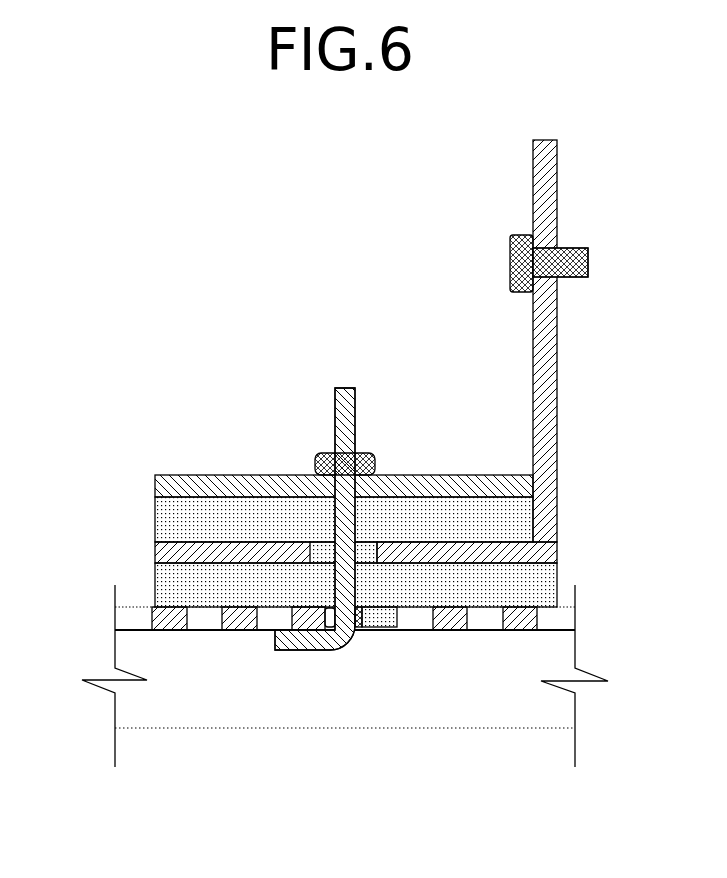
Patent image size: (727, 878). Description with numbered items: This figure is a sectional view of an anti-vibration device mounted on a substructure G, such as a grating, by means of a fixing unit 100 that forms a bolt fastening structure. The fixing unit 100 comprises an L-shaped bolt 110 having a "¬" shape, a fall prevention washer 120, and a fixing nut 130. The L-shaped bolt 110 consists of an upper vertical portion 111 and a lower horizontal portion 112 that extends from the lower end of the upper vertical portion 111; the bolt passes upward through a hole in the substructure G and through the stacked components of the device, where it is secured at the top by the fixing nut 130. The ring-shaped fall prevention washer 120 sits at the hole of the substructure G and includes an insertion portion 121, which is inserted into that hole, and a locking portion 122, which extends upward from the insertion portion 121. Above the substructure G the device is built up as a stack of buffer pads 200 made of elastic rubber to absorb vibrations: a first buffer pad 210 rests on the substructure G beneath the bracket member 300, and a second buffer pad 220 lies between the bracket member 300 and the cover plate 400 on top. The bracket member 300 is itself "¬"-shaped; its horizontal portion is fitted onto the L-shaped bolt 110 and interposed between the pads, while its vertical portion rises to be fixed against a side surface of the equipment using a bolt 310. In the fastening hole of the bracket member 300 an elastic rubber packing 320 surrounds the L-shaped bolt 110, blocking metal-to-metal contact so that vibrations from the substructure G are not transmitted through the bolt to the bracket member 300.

The fixing unit 100 is at (331, 370).
The L-shaped bolt 110 is at (347, 536).
The upper vertical portion 111 is at (333, 430).
The lower horizontal portion 112 is at (287, 652).
The fall prevention washer 120 is at (385, 655).
The insertion portion 121 is at (366, 622).
The locking portion 122 is at (372, 612).
The fixing nut 130 is at (313, 462).
The buffer pad 200 is at (293, 580).
The first buffer pad 210 is at (155, 578).
The second buffer pad 220 is at (155, 520).
The bracket member 300 is at (558, 418).
The bolt 310 is at (510, 262).
The packing 320 is at (383, 552).
The cover plate 400 is at (167, 477).
The substructure G is at (570, 620).